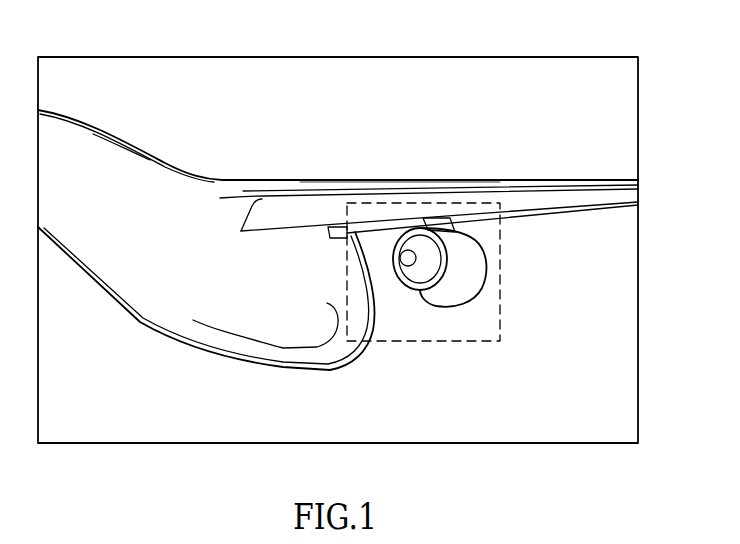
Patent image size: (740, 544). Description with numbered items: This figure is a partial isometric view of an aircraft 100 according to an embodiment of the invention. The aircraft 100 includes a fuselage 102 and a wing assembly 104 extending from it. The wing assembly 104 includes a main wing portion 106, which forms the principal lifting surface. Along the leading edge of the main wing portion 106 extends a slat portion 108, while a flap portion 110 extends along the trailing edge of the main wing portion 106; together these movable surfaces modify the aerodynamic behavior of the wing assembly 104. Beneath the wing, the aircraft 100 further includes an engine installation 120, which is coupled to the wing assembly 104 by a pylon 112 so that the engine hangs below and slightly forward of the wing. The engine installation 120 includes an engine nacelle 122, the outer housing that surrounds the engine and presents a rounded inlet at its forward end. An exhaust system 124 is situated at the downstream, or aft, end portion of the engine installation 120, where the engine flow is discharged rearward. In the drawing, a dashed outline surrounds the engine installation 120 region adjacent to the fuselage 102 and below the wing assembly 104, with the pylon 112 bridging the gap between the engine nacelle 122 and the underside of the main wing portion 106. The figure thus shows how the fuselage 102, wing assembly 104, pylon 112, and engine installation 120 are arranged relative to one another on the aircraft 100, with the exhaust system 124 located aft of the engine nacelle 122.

The aircraft 100 is at (347, 80).
The fuselage 102 is at (163, 337).
The wing assembly 104 is at (490, 140).
The main wing portion 106 is at (428, 178).
The slat portion 108 is at (613, 210).
The flap portion 110 is at (302, 226).
The pylon 112 is at (463, 228).
The engine installation 120 is at (527, 342).
The engine nacelle 122 is at (470, 300).
The exhaust system 124 is at (408, 318).